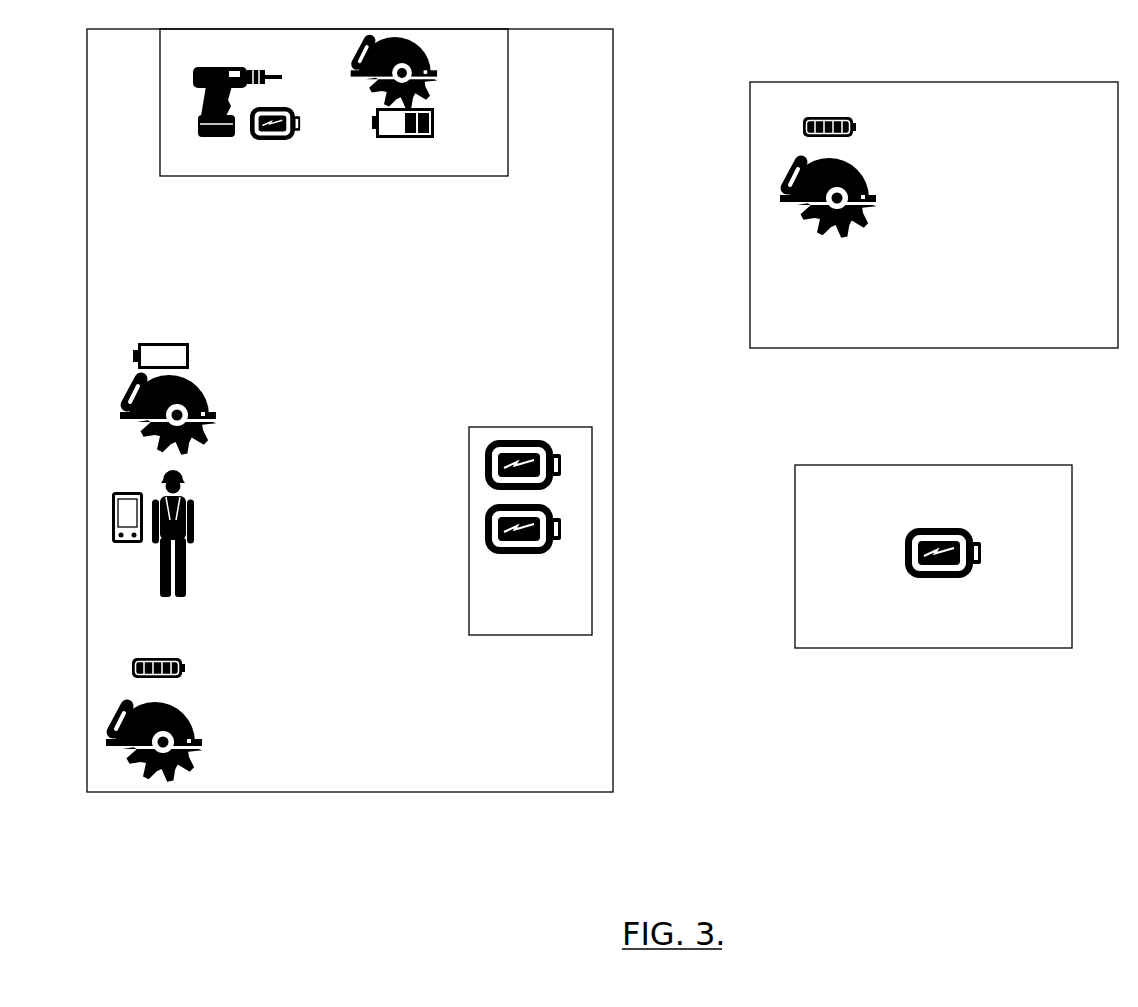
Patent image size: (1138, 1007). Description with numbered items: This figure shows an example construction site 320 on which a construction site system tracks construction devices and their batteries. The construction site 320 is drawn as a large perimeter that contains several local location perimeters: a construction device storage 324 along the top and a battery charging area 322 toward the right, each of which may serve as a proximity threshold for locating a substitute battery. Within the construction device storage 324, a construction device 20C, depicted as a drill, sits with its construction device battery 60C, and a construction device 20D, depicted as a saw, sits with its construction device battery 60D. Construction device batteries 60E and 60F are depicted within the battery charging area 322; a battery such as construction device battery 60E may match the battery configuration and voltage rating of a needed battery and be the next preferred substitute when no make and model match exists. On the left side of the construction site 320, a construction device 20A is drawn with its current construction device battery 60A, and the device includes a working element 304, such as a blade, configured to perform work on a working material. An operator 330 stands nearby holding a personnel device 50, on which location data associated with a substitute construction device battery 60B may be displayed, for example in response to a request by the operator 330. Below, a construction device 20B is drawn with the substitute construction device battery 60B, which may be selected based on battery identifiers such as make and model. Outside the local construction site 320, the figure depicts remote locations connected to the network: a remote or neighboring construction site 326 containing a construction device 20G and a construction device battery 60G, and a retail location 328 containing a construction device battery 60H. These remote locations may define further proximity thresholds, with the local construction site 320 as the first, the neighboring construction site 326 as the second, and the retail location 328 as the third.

The construction device 20A is at (189, 417).
The construction device 20B is at (175, 738).
The construction device 20C is at (237, 90).
The construction device 20D is at (416, 70).
The construction device 20G is at (850, 194).
The current construction device battery 60A is at (173, 346).
The substitute construction device battery 60B is at (170, 658).
The construction device battery 60C is at (295, 133).
The construction device battery 60D is at (419, 134).
The construction device battery 60E is at (484, 465).
The construction device battery 60F is at (484, 529).
The construction device battery 60G is at (843, 115).
The construction device battery 60H is at (905, 549).
The personnel device 50 is at (120, 506).
The working element 304 is at (195, 444).
The construction site 320 is at (350, 445).
The battery charging area 322 is at (526, 511).
The construction device storage 324 is at (334, 116).
The remote or neighboring construction site 326 is at (934, 249).
The retail location 328 is at (933, 591).
The operator 330 is at (212, 533).